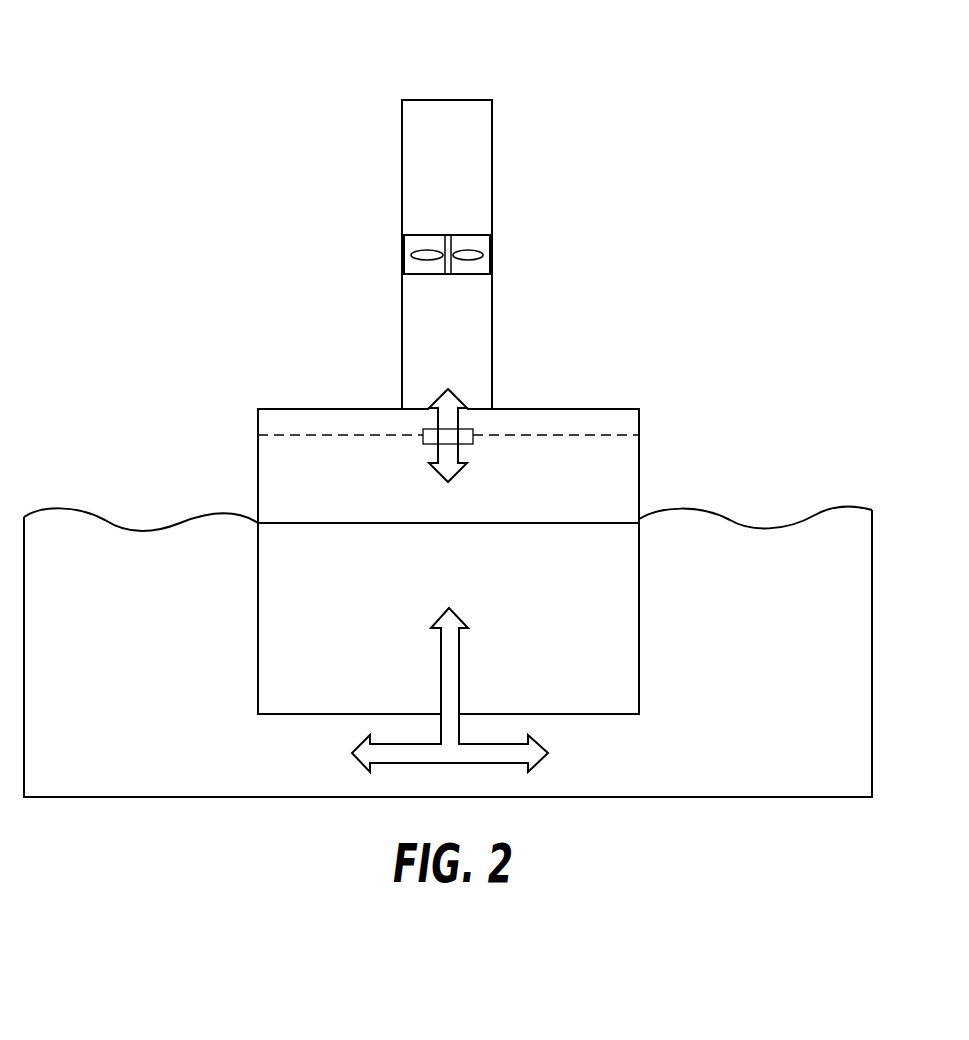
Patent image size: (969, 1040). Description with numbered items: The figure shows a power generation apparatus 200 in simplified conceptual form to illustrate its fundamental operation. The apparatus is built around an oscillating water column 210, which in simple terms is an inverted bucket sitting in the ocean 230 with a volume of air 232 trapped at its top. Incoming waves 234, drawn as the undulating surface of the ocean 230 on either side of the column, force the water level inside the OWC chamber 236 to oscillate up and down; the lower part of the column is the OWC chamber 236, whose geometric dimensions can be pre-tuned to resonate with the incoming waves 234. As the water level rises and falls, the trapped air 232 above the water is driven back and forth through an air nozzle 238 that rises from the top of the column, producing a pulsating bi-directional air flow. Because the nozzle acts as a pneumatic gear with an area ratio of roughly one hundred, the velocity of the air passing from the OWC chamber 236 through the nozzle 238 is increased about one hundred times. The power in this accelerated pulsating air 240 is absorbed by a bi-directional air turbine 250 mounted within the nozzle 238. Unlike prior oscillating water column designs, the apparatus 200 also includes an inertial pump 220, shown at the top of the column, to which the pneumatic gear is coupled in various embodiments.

The power generation apparatus 200 is at (722, 99).
The oscillating water column 210 is at (647, 523).
The inertial pump 220 is at (556, 432).
The ocean 230 is at (795, 739).
The air 232 is at (647, 408).
The waves 234 is at (105, 521).
The OWC chamber 236 is at (258, 621).
The air nozzle 238 is at (492, 166).
The accelerated pulsating air 240 is at (465, 176).
The bi-directional air turbine 250 is at (477, 275).